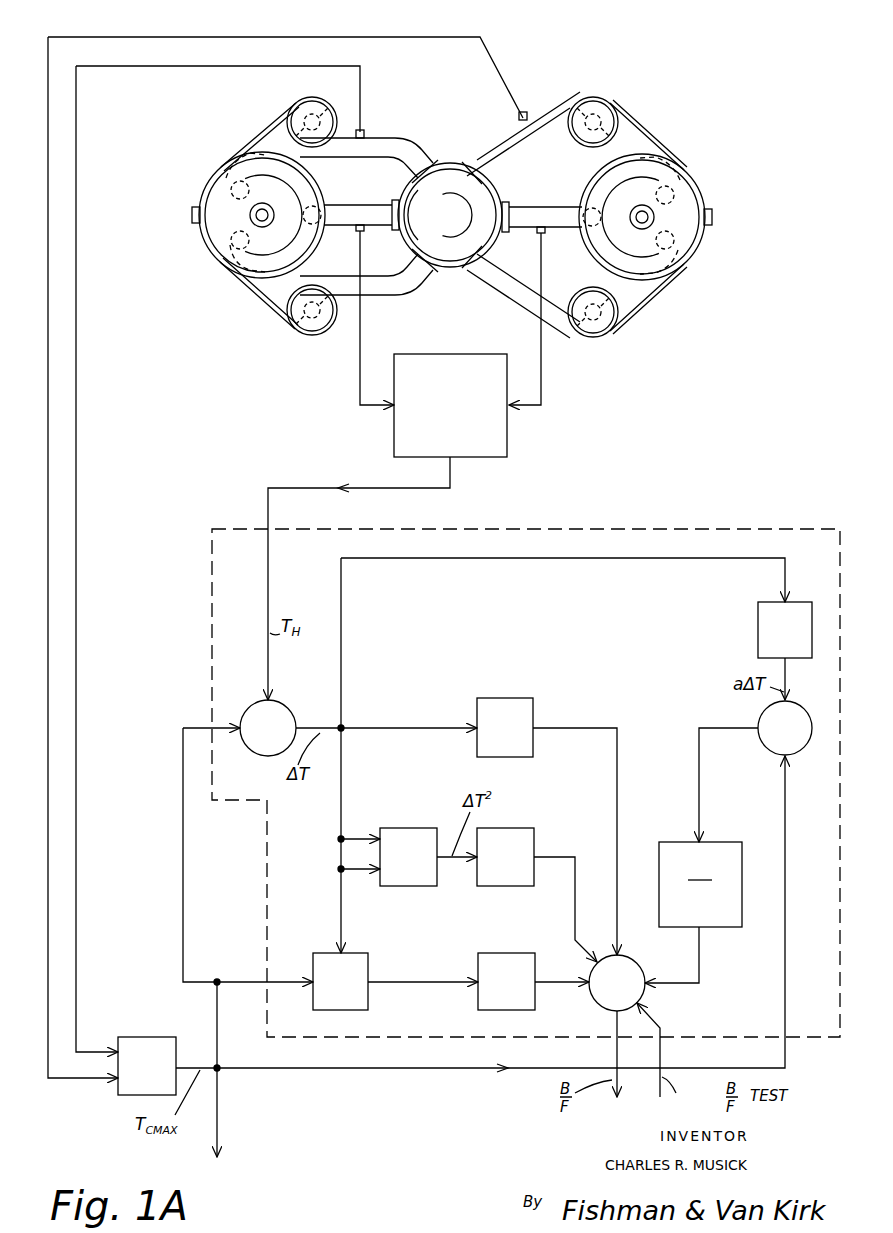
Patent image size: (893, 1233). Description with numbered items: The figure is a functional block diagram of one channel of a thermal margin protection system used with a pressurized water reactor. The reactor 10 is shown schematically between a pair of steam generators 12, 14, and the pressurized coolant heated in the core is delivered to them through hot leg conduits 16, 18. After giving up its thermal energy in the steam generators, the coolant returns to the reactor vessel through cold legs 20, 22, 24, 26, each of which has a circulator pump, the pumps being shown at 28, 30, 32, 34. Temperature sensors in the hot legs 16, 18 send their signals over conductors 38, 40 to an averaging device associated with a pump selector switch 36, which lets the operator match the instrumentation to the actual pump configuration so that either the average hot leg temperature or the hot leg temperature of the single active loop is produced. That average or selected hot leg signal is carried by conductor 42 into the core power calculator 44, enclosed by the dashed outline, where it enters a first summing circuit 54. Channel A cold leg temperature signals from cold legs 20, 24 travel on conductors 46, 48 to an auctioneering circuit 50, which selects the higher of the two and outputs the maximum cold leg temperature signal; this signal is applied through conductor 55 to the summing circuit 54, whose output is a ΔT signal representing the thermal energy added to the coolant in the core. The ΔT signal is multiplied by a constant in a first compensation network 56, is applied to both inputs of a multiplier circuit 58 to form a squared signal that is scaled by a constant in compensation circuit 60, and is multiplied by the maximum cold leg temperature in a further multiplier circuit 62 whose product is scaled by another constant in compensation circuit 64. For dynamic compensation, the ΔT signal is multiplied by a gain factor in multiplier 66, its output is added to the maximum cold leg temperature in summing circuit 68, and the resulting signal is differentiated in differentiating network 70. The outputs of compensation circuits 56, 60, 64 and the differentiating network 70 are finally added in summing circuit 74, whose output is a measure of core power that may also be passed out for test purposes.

The reactor 10 is at (455, 145).
The steam generator 12 is at (207, 157).
The steam generator 14 is at (703, 163).
The hot leg conduit 16 is at (335, 205).
The hot leg conduit 18 is at (541, 207).
The cold leg 20 is at (390, 138).
The cold leg 22 is at (397, 295).
The cold leg 24 is at (532, 122).
The cold leg 26 is at (512, 296).
The circulator pump 28 is at (293, 104).
The circulator pump 30 is at (298, 331).
The circulator pump 32 is at (600, 101).
The circulator pump 34 is at (612, 331).
The pump selector switch 36 is at (394, 425).
The conductor 38 is at (359, 368).
The conductor 40 is at (541, 370).
The conductor 42 is at (272, 488).
The core power calculator 44 is at (749, 524).
The conductor 46 is at (361, 98).
The conductor 48 is at (368, 37).
The auctioneering circuit 50 is at (140, 1037).
The first summing circuit 54 is at (287, 706).
The conductor 55 is at (184, 878).
The first compensation network 56 is at (497, 698).
The multiplier circuit 58 is at (402, 828).
The compensation circuit 60 is at (535, 828).
The multiplier circuit 62 is at (355, 953).
The compensation circuit 64 is at (497, 953).
The multiplier 66 is at (758, 628).
The summing circuit 68 is at (803, 750).
The differentiating network 70 is at (720, 842).
The summing circuit 74 is at (645, 995).